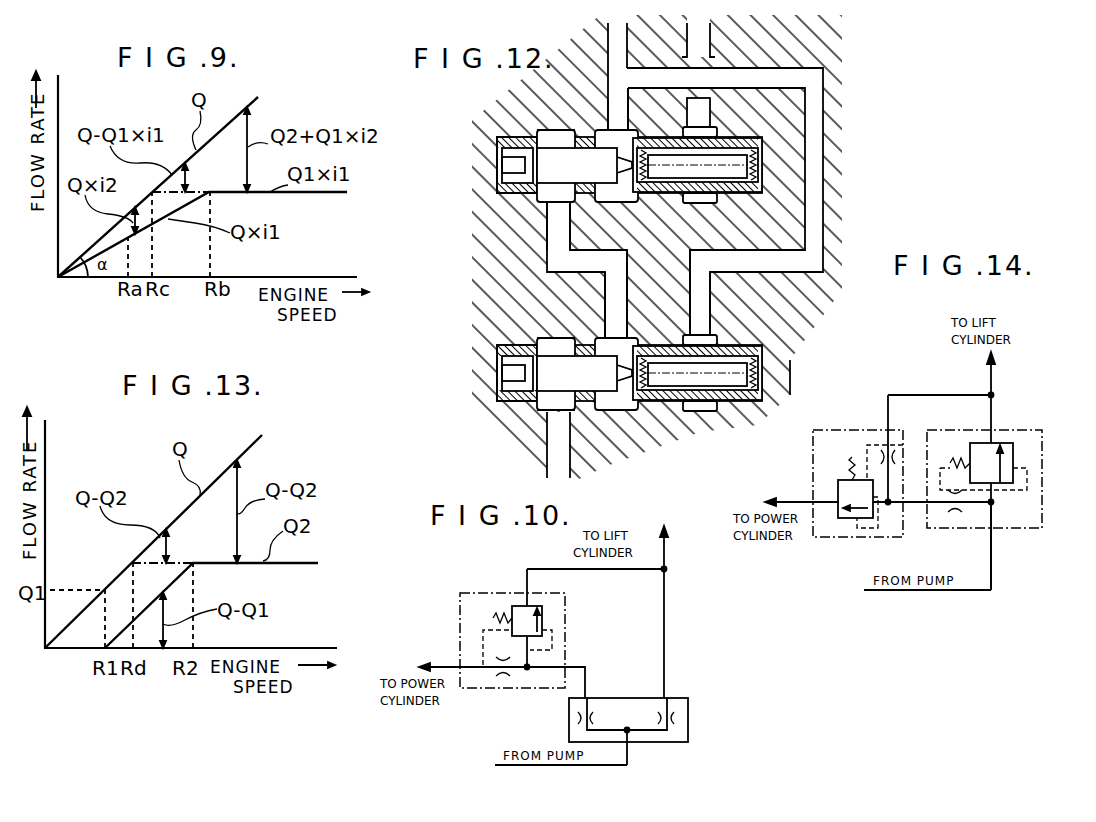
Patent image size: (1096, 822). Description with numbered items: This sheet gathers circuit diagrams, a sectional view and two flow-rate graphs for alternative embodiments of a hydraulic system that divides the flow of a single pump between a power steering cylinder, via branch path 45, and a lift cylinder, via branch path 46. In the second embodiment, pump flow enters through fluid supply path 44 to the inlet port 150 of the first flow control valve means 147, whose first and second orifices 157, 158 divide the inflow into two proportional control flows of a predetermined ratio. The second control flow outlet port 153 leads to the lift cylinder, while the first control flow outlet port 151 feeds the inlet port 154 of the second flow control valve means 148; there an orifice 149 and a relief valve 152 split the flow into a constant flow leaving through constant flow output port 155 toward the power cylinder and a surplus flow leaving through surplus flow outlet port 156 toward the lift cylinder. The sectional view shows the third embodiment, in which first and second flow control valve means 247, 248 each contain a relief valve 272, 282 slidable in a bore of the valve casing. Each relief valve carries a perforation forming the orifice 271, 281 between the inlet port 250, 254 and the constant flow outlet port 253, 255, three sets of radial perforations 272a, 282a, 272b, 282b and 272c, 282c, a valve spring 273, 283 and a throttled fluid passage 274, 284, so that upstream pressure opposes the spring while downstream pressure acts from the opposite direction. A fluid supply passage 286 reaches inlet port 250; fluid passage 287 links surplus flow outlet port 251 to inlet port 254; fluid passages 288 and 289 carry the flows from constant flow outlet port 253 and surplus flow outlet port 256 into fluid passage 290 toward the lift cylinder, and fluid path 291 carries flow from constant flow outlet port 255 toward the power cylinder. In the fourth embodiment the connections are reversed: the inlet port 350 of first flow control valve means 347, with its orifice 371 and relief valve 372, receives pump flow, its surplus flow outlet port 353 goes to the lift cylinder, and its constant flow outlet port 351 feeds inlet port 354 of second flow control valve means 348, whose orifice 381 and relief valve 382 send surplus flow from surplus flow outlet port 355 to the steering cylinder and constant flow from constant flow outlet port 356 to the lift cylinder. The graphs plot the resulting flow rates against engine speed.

In FIG. 10, the fluid supply path 44 is at (495, 765).
In FIG. 14, the fluid supply path 44 is at (918, 591).
In FIG. 10, the branch path 45 is at (442, 662).
In FIG. 14, the branch path 45 is at (794, 498).
In FIG. 10, the branch path 46 is at (665, 552).
In FIG. 14, the branch path 46 is at (993, 375).
In FIG. 10, the first flow control valve means 147 is at (646, 668).
In FIG. 10, the second flow control valve means 148 is at (452, 598).
In FIG. 10, the orifice 149 is at (505, 673).
In FIG. 10, the inlet port 150 is at (633, 742).
In FIG. 10, the first control flow outlet port 151 is at (588, 697).
In FIG. 10, the relief valve 152 is at (542, 608).
In FIG. 10, the second control flow outlet port 153 is at (661, 695).
In FIG. 10, the inlet port 154 is at (565, 663).
In FIG. 10, the constant flow output port 155 is at (453, 665).
In FIG. 10, the surplus flow outlet port 156 is at (527, 593).
In FIG. 10, the first orifice 157 is at (572, 720).
In FIG. 10, the second orifice 158 is at (675, 697).
In FIG. 12, the first flow control valve means 247 is at (665, 412).
In FIG. 12, the second flow control valve means 248 is at (577, 126).
In FIG. 12, the inlet port 250 is at (548, 410).
In FIG. 12, the surplus flow outlet port 251 is at (602, 335).
In FIG. 12, the constant flow outlet port 253 is at (715, 335).
In FIG. 12, the inlet port 254 is at (547, 207).
In FIG. 12, the constant flow outlet port 255 is at (713, 130).
In FIG. 12, the surplus flow outlet port 256 is at (606, 115).
In FIG. 12, the orifice 271 is at (628, 360).
In FIG. 12, the relief valve 272 is at (598, 382).
In FIG. 12, the radial perforations 272a is at (537, 403).
In FIG. 12, the radial perforations 272b is at (587, 373).
In FIG. 12, the radial perforations 272c is at (697, 373).
In FIG. 12, the valve spring 273 is at (727, 411).
In FIG. 12, the throttled fluid passage 274 is at (532, 355).
In FIG. 12, the orifice 281 is at (632, 150).
In FIG. 12, the relief valve 282 is at (601, 176).
In FIG. 12, the radial perforations 282a is at (543, 197).
In FIG. 12, the radial perforations 282b is at (587, 165).
In FIG. 12, the radial perforations 282c is at (697, 165).
In FIG. 12, the valve spring 283 is at (722, 203).
In FIG. 12, the throttled fluid passage 284 is at (518, 147).
In FIG. 12, the fluid supply passage 286 is at (556, 448).
In FIG. 12, the fluid passage 287 is at (556, 262).
In FIG. 12, the fluid passage 288 is at (820, 185).
In FIG. 12, the fluid passage 289 is at (618, 105).
In FIG. 12, the fluid passage 290 is at (607, 40).
In FIG. 12, the fluid path 291 is at (700, 97).
In FIG. 14, the first flow control valve means 347 is at (1015, 540).
In FIG. 14, the second flow control valve means 348 is at (843, 420).
In FIG. 14, the inlet port 350 is at (991, 528).
In FIG. 14, the constant flow outlet port 351 is at (929, 503).
In FIG. 14, the surplus flow outlet port 353 is at (992, 440).
In FIG. 14, the inlet port 354 is at (888, 512).
In FIG. 14, the surplus flow outlet port 355 is at (813, 500).
In FIG. 14, the constant flow outlet port 356 is at (888, 415).
In FIG. 14, the orifice 371 is at (975, 512).
In FIG. 14, the relief valve 372 is at (1005, 445).
In FIG. 14, the orifice 381 is at (897, 455).
In FIG. 14, the relief valve 382 is at (840, 519).